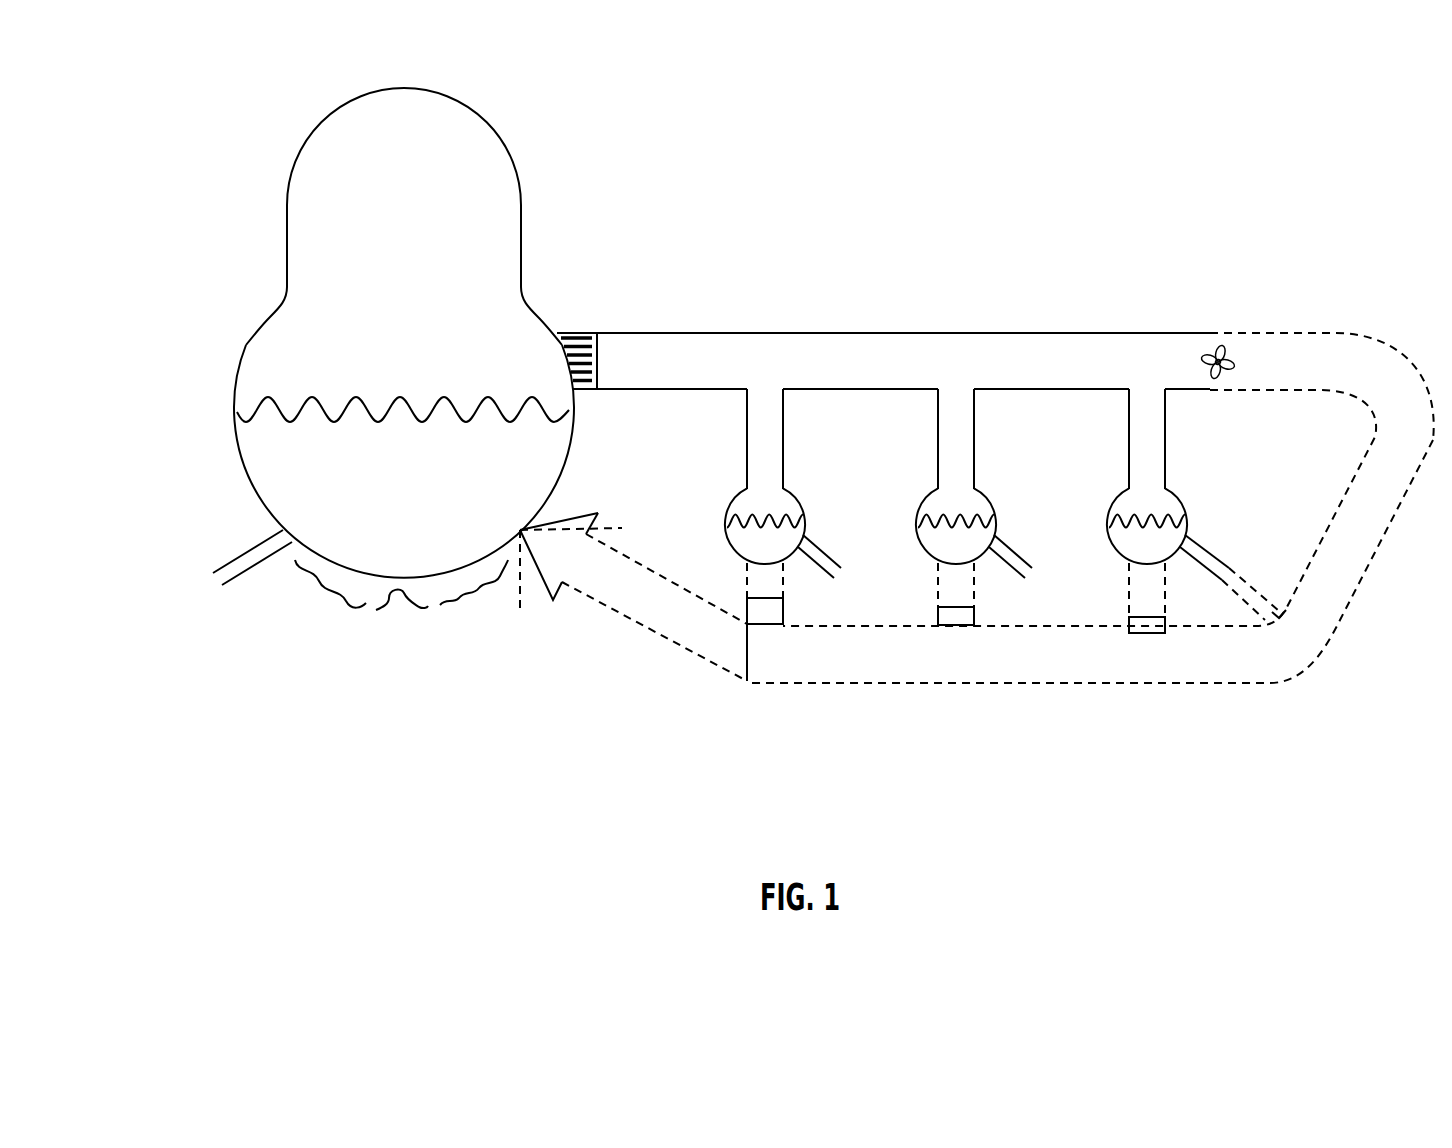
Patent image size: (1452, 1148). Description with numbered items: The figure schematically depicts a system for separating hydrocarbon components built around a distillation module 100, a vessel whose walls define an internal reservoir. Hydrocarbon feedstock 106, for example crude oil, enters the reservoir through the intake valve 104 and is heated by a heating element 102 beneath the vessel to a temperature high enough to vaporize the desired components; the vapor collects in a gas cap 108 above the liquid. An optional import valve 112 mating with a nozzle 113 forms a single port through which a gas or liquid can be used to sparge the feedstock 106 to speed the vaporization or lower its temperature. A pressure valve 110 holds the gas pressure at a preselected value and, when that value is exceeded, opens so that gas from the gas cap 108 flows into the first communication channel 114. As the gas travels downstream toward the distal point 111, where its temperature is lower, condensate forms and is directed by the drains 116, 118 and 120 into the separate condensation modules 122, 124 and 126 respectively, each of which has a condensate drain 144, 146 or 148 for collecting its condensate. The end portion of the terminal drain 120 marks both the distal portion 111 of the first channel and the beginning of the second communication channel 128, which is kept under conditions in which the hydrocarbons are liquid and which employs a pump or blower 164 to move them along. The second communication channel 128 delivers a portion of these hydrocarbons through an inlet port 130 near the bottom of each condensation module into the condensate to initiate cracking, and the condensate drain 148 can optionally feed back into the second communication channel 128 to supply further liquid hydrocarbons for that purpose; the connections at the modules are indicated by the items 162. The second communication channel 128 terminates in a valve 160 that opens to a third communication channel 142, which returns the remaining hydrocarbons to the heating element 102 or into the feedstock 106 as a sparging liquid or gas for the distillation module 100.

The distillation module 100 is at (218, 456).
The heating element 102 is at (386, 610).
The intake valve 104 is at (236, 557).
The feedstock 106 is at (424, 557).
The gas cap 108 is at (382, 262).
The pressure valve 110 is at (588, 330).
The distal point 111 is at (1278, 333).
The import valve 112 is at (601, 524).
The nozzle 113 is at (520, 598).
The first communication channel 114 is at (642, 377).
The drain 116 is at (747, 437).
The drain 118 is at (938, 437).
The terminal drain 120 is at (1129, 437).
The condensation module 122 is at (737, 493).
The condensation module 124 is at (928, 493).
The condensation module 126 is at (1120, 493).
The second communication channel 128 is at (1360, 580).
The inlet port 130 is at (746, 578).
The third communication channel 142 is at (684, 640).
The condensate drain 144 is at (820, 547).
The condensate drain 146 is at (1011, 547).
The condensate drain 148 is at (1204, 548).
The valve 160 is at (758, 672).
The valve 162 is at (788, 647).
The pump or blower 164 is at (1236, 368).